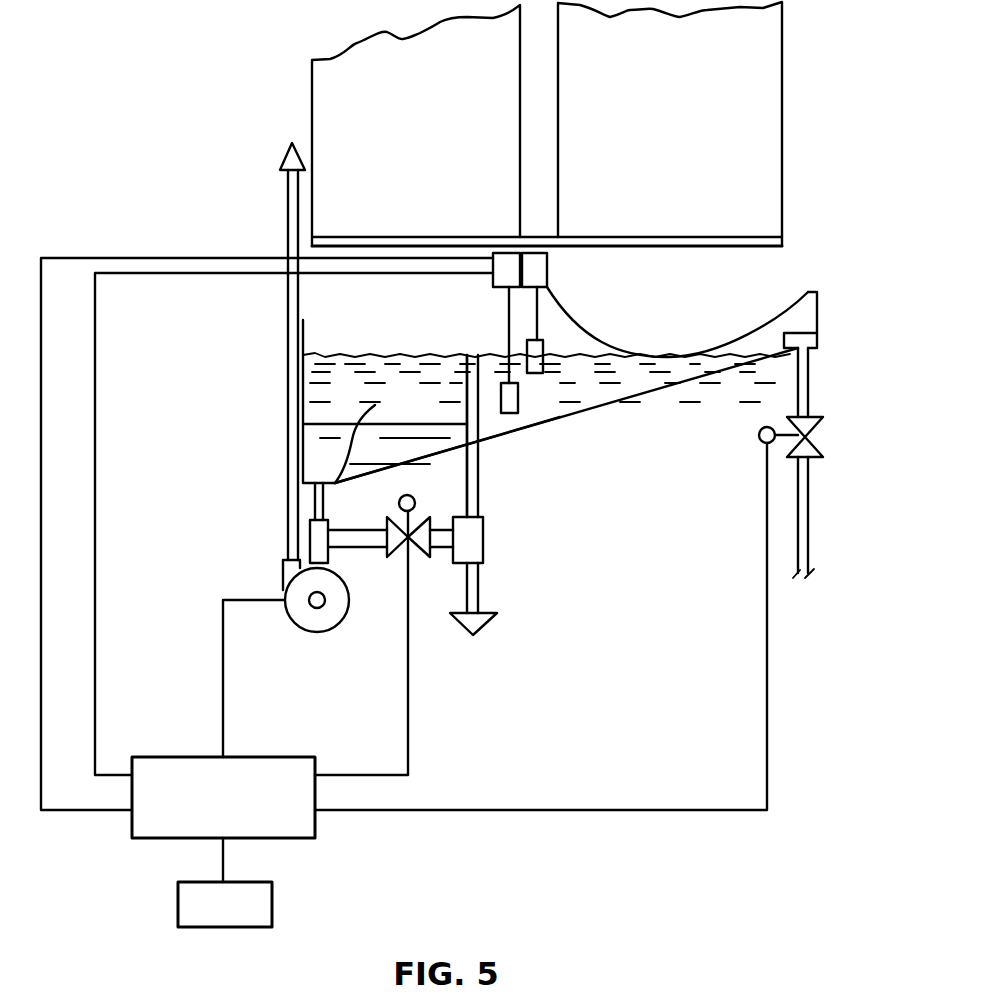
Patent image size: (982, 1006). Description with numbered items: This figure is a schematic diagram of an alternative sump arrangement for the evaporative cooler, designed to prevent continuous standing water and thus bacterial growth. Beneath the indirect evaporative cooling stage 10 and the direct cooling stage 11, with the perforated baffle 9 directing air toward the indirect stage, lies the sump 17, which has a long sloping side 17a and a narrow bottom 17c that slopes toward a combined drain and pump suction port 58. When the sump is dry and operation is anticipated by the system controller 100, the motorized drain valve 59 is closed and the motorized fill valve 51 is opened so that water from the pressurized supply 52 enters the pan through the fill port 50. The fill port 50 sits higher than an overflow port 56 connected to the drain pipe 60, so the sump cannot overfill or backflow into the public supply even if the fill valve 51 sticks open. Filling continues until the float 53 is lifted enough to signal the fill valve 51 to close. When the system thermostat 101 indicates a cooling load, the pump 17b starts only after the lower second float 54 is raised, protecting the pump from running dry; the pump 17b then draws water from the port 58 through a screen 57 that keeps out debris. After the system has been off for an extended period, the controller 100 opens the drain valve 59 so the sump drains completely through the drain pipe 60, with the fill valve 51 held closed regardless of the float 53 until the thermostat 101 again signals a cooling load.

The perforated baffle 9 is at (735, 345).
The indirect evaporative cooling stage 10 is at (687, 120).
The direct cooling stage 11 is at (427, 119).
The sump 17 is at (588, 410).
The long sloping side 17a is at (670, 385).
The pump 17b is at (325, 633).
The narrow bottom 17c is at (375, 405).
The fill port 50 is at (819, 336).
The motorized fill valve 51 is at (825, 456).
The pressurized supply 52 is at (810, 522).
The float 53 is at (537, 373).
The second float 54 is at (516, 413).
The overflow port 56 is at (470, 355).
The screen 57 is at (338, 423).
The combined drain and pump suction port 58 is at (318, 478).
The motorized drain valve 59 is at (428, 553).
The drain pipe 60 is at (485, 580).
The system controller 100 is at (223, 797).
The system thermostat 101 is at (225, 882).